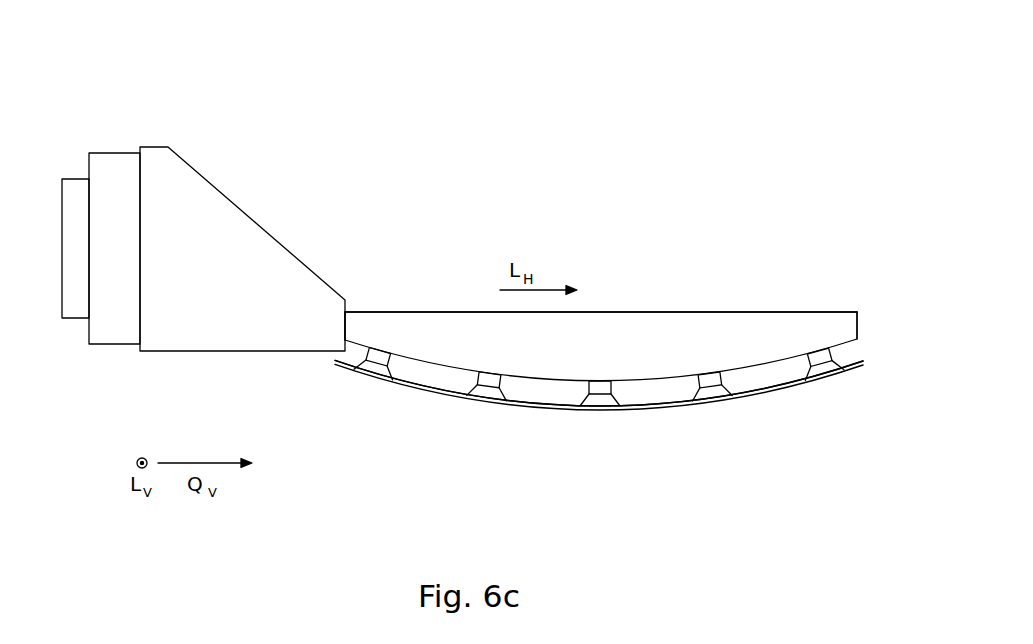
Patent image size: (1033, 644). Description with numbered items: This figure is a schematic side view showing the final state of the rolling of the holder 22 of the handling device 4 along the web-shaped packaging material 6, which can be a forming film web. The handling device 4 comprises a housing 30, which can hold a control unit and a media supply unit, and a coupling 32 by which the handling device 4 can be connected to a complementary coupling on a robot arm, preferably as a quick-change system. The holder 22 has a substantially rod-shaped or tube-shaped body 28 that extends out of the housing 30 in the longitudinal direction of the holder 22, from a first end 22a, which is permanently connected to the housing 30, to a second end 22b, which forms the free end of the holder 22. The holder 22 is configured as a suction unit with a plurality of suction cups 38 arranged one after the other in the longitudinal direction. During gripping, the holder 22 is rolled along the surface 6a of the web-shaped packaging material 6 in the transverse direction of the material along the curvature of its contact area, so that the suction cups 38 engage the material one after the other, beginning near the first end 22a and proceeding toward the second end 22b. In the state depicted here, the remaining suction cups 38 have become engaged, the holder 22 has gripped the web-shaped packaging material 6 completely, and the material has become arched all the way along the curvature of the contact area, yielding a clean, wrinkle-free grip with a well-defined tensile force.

The handling device 4 is at (463, 146).
The web-shaped packaging material 6 is at (767, 388).
The surface of the web-shaped packaging material 6a is at (860, 360).
The holder 22 is at (634, 235).
The first end 22a is at (357, 311).
The second end 22b is at (837, 311).
The body 28 is at (742, 335).
The housing 30 is at (188, 178).
The coupling 32 is at (67, 178).
The suction cups 38 is at (378, 372).